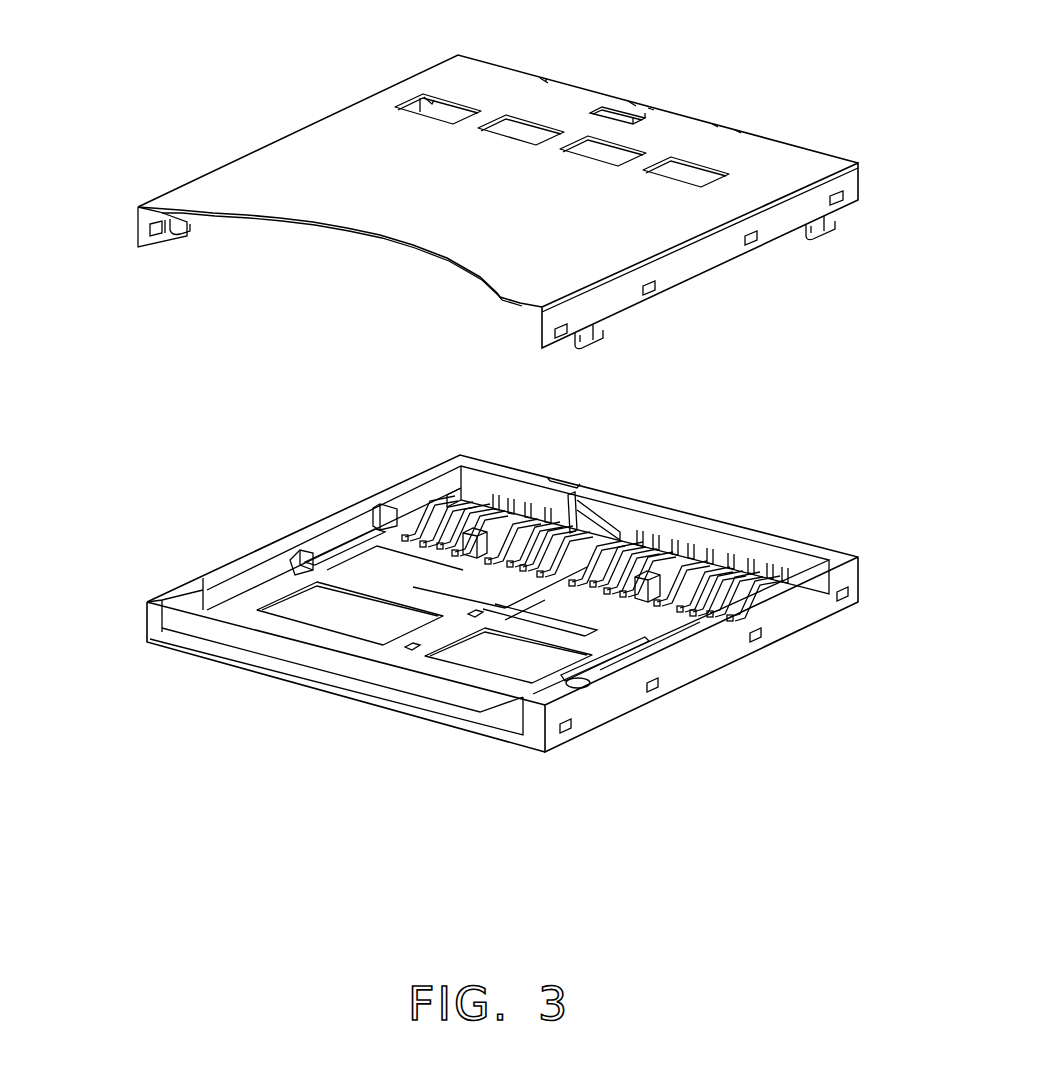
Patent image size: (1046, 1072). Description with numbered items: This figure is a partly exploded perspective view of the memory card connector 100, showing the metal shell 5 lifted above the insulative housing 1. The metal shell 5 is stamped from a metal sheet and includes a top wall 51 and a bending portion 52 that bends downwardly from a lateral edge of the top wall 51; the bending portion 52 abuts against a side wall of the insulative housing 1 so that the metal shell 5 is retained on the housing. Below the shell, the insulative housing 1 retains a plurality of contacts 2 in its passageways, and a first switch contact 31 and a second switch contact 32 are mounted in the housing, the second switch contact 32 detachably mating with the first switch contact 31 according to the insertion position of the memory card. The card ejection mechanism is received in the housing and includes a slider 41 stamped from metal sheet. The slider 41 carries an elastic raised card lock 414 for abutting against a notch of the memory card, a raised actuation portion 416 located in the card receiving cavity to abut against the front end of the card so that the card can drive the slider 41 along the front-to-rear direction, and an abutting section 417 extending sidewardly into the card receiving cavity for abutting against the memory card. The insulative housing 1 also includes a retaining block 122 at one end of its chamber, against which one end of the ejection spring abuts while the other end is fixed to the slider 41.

The memory card connector 100 is at (132, 103).
The metal shell 5 is at (272, 103).
The top wall 51 is at (672, 128).
The bending portion 52 is at (708, 255).
The insulative housing 1 is at (770, 540).
The contacts 2 is at (432, 508).
The first switch contact 31 is at (587, 513).
The second switch contact 32 is at (620, 532).
The slider 41 is at (387, 648).
The elastic raised card lock 414 is at (300, 558).
The raised actuation portion 416 is at (643, 585).
The abutting section 417 is at (388, 512).
The retaining block 122 is at (587, 677).